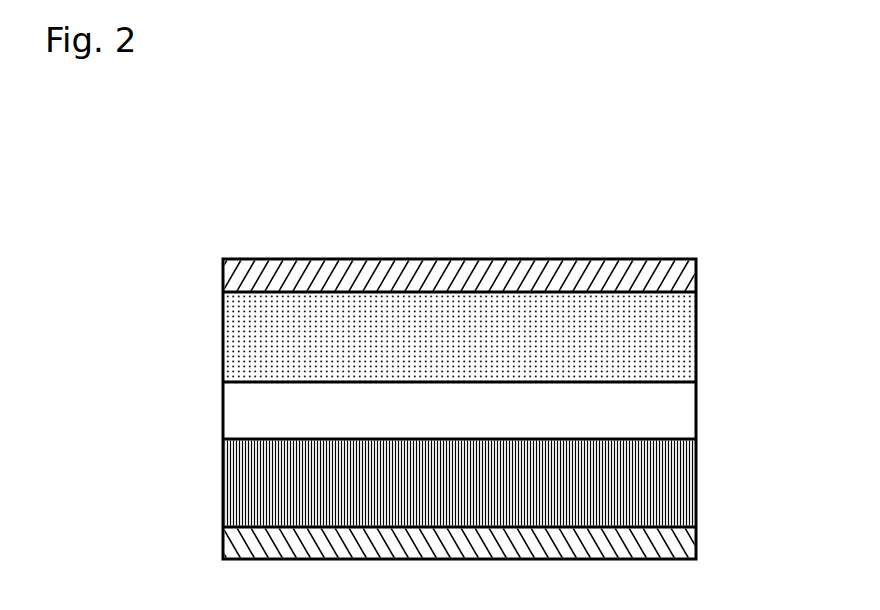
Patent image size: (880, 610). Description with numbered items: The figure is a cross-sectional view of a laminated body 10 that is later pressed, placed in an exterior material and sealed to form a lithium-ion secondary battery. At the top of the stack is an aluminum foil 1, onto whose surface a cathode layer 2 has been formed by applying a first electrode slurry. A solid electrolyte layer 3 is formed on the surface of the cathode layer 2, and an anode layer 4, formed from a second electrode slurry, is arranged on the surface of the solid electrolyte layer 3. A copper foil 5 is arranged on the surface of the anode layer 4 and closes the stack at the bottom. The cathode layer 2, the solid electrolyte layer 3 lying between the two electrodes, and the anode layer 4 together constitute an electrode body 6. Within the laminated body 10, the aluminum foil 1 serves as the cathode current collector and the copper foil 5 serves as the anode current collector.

The laminated body 10 is at (460, 200).
The aluminum foil 1 is at (698, 274).
The cathode layer 2 is at (698, 333).
The solid electrolyte layer 3 is at (698, 410).
The anode layer 4 is at (698, 481).
The copper foil 5 is at (698, 541).
The electrode body 6 is at (784, 290).